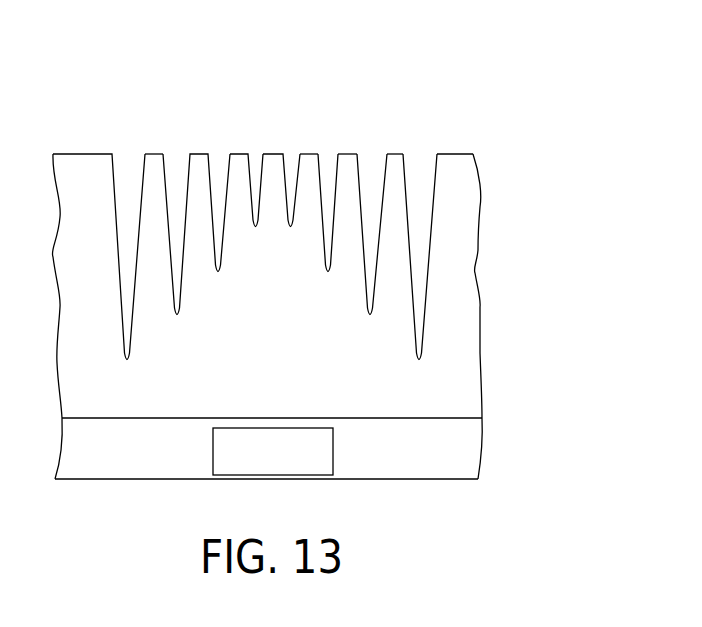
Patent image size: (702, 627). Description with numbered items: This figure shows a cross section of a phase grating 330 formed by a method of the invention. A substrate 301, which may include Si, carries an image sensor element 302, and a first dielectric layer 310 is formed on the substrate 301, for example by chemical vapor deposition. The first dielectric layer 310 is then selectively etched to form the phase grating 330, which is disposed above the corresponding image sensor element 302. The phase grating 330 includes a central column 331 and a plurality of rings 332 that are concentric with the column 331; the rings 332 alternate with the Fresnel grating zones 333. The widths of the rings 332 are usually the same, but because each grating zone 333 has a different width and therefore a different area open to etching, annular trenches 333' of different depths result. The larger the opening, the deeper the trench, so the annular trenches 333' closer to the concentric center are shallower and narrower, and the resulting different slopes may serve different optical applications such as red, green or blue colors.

The phase grating 330 is at (486, 84).
The column 331 is at (273, 156).
The rings 332 is at (153, 156).
The Fresnel grating zones 333 is at (361, 190).
The annular trenches 333' is at (435, 206).
The first dielectric layer 310 is at (434, 403).
The substrate 301 is at (434, 464).
The image sensor element 302 is at (293, 465).